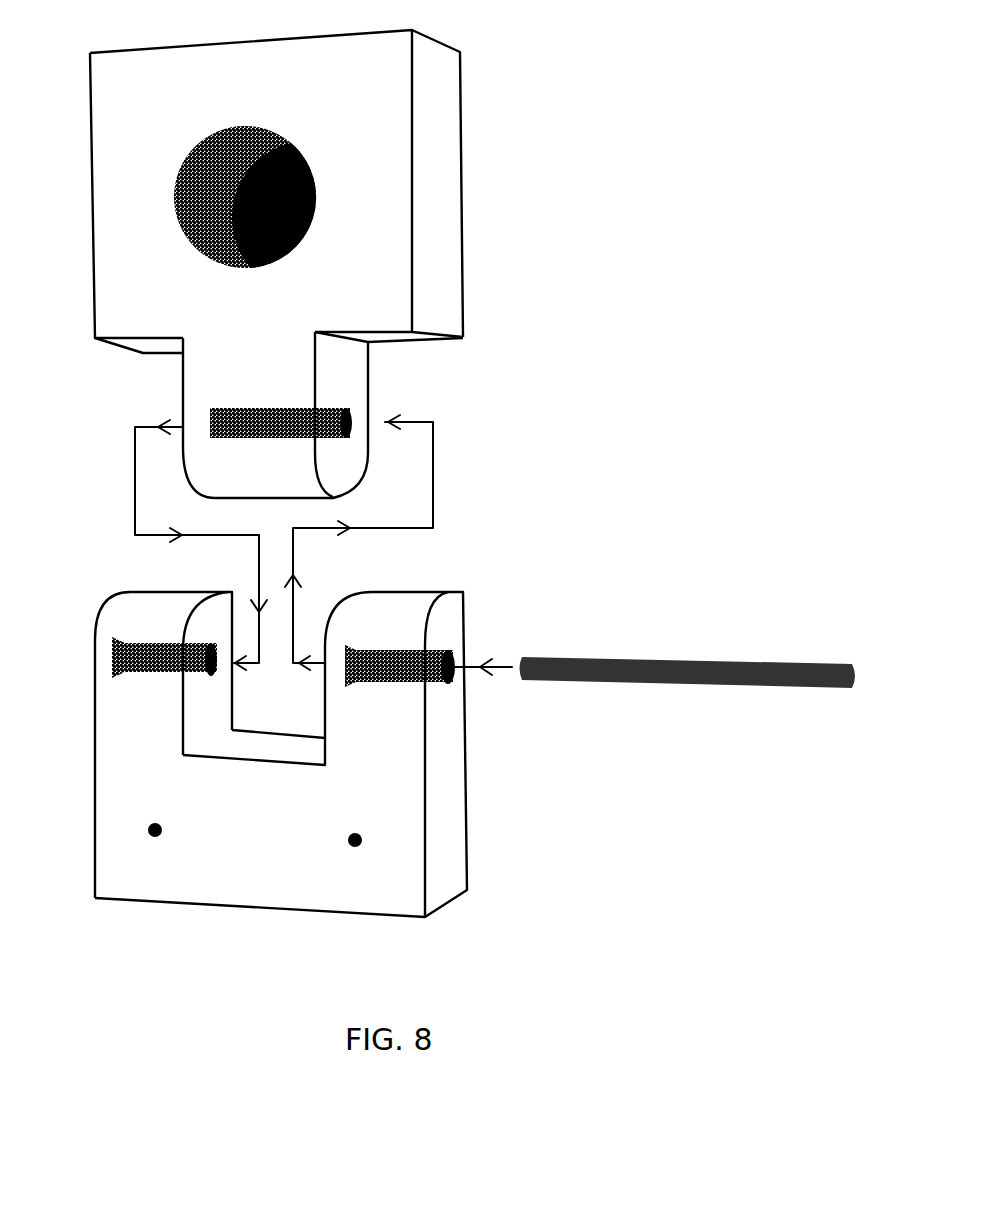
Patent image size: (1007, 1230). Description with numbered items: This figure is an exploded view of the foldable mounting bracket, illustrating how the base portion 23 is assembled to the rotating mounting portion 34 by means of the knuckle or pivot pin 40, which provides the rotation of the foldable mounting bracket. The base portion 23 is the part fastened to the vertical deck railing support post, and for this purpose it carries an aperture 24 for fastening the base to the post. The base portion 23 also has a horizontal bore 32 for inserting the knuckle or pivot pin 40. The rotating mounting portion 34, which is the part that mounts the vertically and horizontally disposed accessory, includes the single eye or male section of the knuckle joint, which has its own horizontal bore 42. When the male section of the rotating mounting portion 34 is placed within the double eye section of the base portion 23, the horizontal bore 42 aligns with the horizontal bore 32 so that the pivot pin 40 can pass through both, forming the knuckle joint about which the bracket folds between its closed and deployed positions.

The foldable mounting bracket base portion 23 is at (387, 878).
The aperture for fastening the base 24 is at (155, 840).
The horizontal bore for inserting the knuckle or pivot pin 32 is at (108, 653).
The rotating mounting portion 34 is at (135, 85).
The knuckle or pivot pin 40 is at (622, 658).
The horizontal bore 42 is at (358, 417).